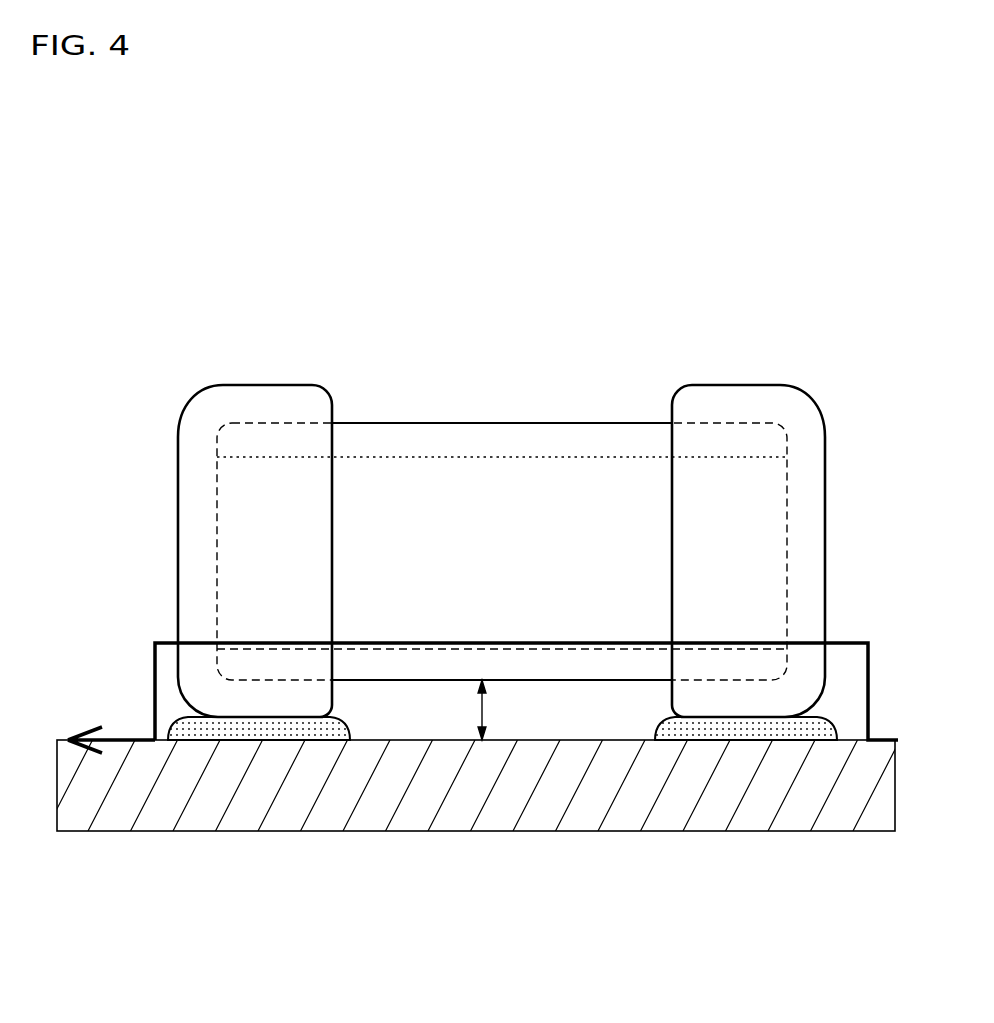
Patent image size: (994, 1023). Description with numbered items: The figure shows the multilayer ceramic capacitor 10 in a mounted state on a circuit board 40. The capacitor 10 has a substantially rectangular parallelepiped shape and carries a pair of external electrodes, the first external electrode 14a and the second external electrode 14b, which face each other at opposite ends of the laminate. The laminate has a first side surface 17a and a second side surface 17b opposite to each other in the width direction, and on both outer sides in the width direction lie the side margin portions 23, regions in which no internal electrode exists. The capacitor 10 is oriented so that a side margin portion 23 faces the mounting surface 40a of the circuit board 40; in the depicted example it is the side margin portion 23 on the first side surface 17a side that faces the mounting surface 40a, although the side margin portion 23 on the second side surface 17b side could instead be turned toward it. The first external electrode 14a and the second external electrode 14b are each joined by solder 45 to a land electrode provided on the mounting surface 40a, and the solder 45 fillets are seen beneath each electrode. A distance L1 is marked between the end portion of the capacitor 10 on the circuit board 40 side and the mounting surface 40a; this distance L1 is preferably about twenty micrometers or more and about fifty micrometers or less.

The multilayer ceramic capacitor 10 is at (496, 526).
The first external electrode 14a is at (178, 452).
The second external electrode 14b is at (825, 481).
The first side surface 17a is at (412, 680).
The second side surface 17b is at (372, 423).
The side margin portion 23 is at (465, 450).
The circuit board 40 is at (202, 832).
The mounting surface 40a is at (134, 727).
The solder 45 is at (188, 717).
The distance L1 is at (475, 708).